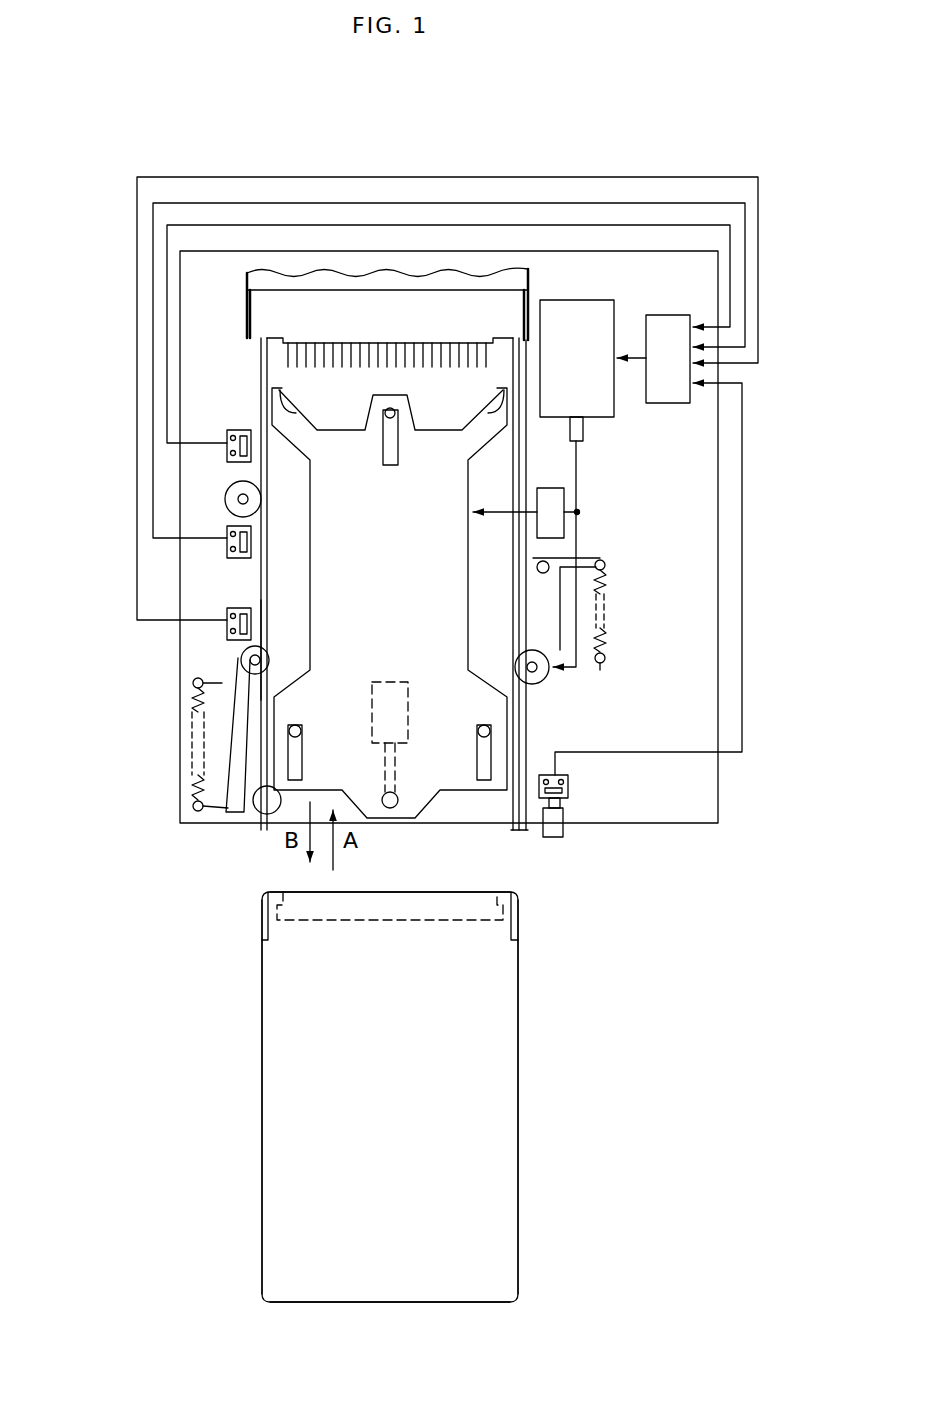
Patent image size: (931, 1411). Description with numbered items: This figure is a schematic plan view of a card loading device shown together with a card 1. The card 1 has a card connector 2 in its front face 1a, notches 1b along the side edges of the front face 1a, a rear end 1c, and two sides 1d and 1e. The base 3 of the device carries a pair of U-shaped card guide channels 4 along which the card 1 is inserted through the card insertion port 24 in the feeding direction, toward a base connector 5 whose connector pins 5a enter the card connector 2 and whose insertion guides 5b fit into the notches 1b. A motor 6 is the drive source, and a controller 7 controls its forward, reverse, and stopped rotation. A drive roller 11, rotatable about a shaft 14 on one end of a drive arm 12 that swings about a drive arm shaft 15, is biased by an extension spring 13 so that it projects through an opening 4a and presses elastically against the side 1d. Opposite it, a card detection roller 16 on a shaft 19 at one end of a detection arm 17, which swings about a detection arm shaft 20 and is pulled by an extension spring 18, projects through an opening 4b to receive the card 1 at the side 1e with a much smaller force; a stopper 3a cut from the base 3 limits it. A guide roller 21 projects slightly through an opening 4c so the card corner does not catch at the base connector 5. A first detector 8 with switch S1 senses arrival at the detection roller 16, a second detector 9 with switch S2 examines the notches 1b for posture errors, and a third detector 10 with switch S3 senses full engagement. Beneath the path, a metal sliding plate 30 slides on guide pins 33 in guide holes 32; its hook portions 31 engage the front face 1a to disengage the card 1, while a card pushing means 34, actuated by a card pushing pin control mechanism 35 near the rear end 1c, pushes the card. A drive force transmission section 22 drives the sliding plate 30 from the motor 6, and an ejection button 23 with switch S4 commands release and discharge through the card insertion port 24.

The card 1 is at (500, 1253).
The front face 1a is at (292, 890).
The notches 1b is at (265, 930).
The rear end 1c is at (447, 1305).
The side 1d is at (518, 1130).
The side 1e is at (262, 1127).
The card connector 2 is at (452, 902).
The base 3 is at (718, 785).
The stopper 3a is at (205, 710).
The card guide channels 4 is at (252, 583).
The opening 4a is at (524, 686).
The opening 4b is at (270, 672).
The opening 4c is at (262, 495).
The base connector 5 is at (455, 300).
The connector pins 5a is at (400, 355).
The insertion guides 5b is at (280, 340).
The motor 6 is at (594, 418).
The controller 7 is at (670, 405).
The first detector 8 is at (228, 612).
The second detector 9 is at (228, 437).
The third detector 10 is at (228, 532).
The drive roller 11 is at (550, 675).
The drive arm 12 is at (593, 548).
The extension spring 13 is at (612, 624).
The shaft 14 is at (518, 663).
The drive arm shaft 15 is at (572, 556).
The card detection roller 16 is at (241, 660).
The detection arm 17 is at (240, 810).
The extension spring 18 is at (190, 770).
The shaft 19 is at (267, 642).
The detection arm shaft 20 is at (252, 812).
The guide roller 21 is at (225, 496).
The drive force transmission section 22 is at (566, 498).
The ejection button 23 is at (566, 830).
The card insertion port 24 is at (520, 832).
The sliding plate 30 is at (472, 612).
The hook portions 31 is at (290, 412).
The guide holes 32 is at (395, 470).
The guide pins 33 is at (385, 420).
The card pushing means 34 is at (392, 812).
The card pushing pin control mechanism 35 is at (390, 682).
The detection switch S1 is at (228, 630).
The detection switch S2 is at (228, 432).
The detection switch S3 is at (228, 552).
The switch S4 is at (570, 786).